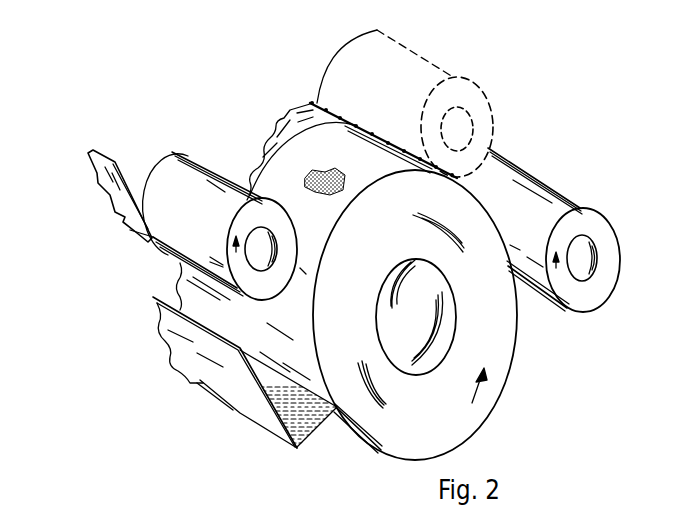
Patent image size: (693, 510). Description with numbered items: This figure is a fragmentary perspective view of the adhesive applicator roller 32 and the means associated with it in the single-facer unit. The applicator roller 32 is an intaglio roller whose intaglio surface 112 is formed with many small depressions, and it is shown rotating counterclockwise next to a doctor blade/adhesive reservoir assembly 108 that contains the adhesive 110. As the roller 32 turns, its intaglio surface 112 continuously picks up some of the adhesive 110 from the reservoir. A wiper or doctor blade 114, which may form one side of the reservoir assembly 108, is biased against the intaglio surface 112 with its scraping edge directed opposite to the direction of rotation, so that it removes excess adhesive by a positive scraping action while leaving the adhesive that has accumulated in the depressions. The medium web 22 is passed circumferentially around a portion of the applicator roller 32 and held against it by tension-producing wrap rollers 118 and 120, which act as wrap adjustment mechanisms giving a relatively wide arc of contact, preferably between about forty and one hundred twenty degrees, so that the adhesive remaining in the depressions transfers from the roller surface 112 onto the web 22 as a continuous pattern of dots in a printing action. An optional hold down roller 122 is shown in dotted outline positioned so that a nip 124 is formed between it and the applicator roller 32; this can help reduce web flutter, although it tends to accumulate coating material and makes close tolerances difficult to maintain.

The medium web 22 is at (127, 213).
The applicator roller 32 is at (491, 417).
The doctor blade/adhesive reservoir assembly 108 is at (258, 428).
The adhesive 110 is at (327, 428).
The intaglio surface 112 is at (355, 162).
The doctor blade 114 is at (340, 430).
The wrap roller 118 is at (198, 150).
The wrap roller 120 is at (603, 297).
The hold down roller 122 is at (491, 112).
The nip 124 is at (308, 103).